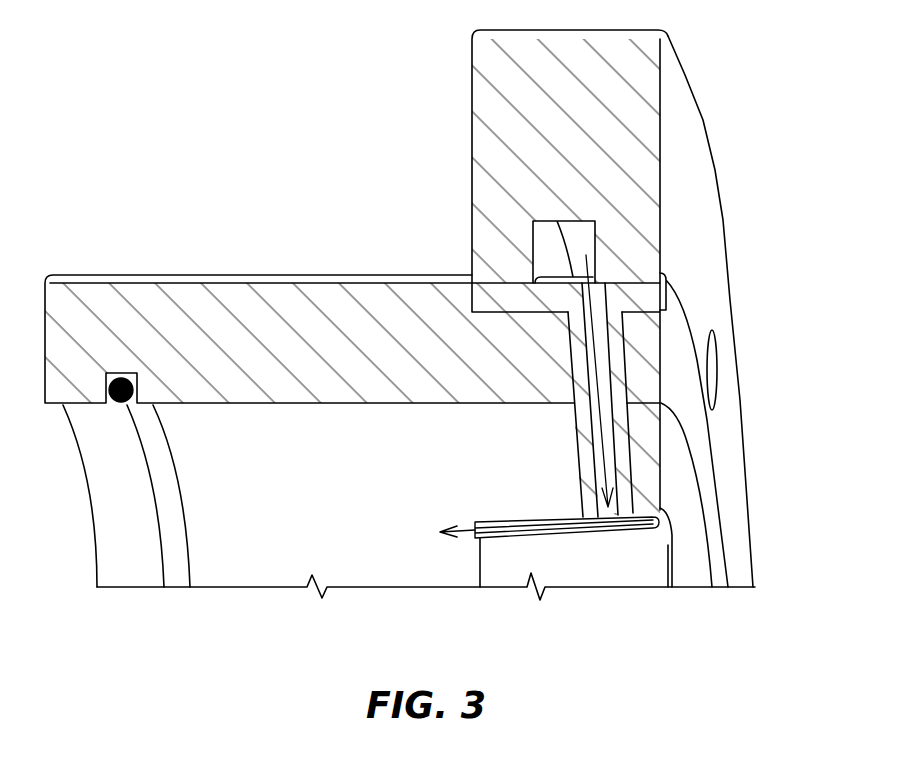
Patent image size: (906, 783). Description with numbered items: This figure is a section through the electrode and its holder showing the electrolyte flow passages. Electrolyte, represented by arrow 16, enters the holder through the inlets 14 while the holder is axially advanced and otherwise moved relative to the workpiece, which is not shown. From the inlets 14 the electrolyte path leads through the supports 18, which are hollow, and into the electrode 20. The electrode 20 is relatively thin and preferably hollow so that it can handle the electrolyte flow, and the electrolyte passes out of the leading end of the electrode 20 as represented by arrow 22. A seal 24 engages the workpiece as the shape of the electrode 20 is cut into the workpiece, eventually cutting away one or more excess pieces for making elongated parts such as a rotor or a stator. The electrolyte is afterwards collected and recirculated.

The inlets 14 is at (716, 385).
The arrow 16 is at (712, 369).
The supports 18 is at (577, 355).
The electrode 20 is at (562, 533).
The arrow 22 is at (464, 537).
The seal 24 is at (119, 385).